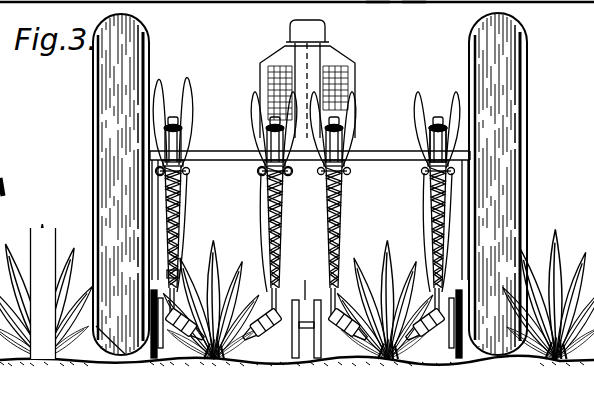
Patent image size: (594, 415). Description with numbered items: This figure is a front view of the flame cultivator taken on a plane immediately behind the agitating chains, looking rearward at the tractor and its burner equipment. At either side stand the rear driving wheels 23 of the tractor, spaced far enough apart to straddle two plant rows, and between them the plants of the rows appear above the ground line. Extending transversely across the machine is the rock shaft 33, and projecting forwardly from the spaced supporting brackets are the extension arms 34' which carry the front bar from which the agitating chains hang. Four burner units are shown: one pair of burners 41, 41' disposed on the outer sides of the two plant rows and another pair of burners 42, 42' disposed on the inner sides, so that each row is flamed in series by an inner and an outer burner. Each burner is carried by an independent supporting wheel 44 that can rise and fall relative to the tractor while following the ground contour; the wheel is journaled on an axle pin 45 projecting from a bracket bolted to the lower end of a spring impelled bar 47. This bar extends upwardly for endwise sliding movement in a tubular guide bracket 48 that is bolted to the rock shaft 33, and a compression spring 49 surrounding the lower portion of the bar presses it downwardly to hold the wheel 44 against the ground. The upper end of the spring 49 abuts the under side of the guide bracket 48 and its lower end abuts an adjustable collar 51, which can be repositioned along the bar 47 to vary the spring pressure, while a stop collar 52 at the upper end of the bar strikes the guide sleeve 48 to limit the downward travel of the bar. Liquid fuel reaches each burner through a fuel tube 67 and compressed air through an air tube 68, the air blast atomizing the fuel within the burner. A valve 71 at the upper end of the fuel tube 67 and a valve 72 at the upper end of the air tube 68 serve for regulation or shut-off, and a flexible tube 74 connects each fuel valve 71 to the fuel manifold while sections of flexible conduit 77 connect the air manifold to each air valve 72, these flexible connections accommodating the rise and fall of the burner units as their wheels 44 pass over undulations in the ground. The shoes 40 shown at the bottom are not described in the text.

The driving wheels 23 is at (112, 112).
The rock shaft 33 is at (150, 154).
The extension arms 34' is at (253, 130).
The shoe 40 is at (482, 316).
The burner unit 41 is at (185, 331).
The burner unit 41' is at (424, 332).
The burner unit 42 is at (261, 332).
The burner unit 42' is at (348, 332).
The supporting wheel 44 is at (138, 344).
The axle pin 45 is at (413, 15).
The spring impelled bar 47 is at (146, 227).
The tubular guide bracket 48 is at (466, 142).
The compression spring 49 is at (145, 255).
The adjustable collar 51 is at (145, 275).
The stop collar 52 is at (466, 117).
The fuel tube 67 is at (236, 232).
The air tube 68 is at (149, 232).
The valve 71 is at (251, 181).
The valve 72 is at (138, 178).
The flexible tube 74 is at (190, 114).
The flexible conduit 77 is at (163, 114).